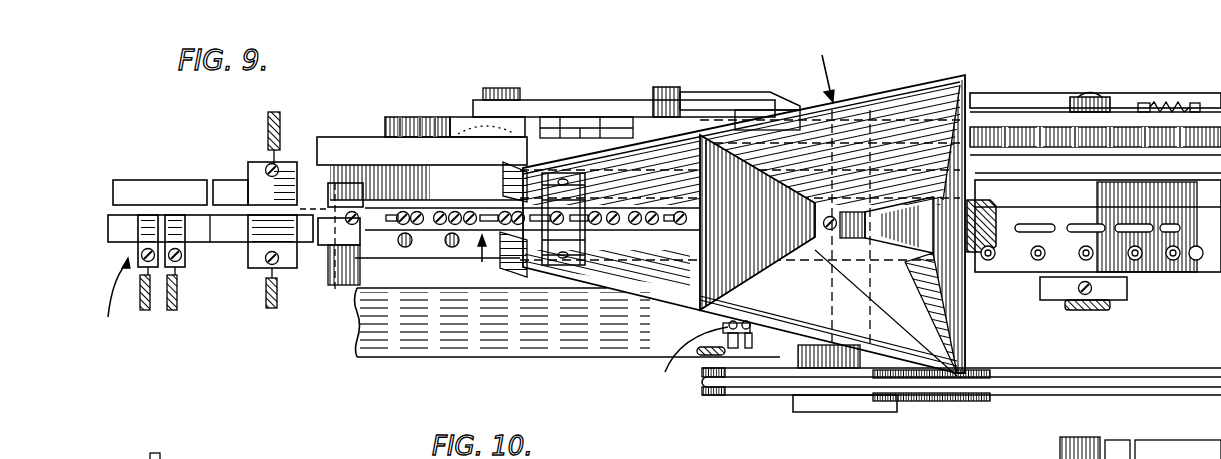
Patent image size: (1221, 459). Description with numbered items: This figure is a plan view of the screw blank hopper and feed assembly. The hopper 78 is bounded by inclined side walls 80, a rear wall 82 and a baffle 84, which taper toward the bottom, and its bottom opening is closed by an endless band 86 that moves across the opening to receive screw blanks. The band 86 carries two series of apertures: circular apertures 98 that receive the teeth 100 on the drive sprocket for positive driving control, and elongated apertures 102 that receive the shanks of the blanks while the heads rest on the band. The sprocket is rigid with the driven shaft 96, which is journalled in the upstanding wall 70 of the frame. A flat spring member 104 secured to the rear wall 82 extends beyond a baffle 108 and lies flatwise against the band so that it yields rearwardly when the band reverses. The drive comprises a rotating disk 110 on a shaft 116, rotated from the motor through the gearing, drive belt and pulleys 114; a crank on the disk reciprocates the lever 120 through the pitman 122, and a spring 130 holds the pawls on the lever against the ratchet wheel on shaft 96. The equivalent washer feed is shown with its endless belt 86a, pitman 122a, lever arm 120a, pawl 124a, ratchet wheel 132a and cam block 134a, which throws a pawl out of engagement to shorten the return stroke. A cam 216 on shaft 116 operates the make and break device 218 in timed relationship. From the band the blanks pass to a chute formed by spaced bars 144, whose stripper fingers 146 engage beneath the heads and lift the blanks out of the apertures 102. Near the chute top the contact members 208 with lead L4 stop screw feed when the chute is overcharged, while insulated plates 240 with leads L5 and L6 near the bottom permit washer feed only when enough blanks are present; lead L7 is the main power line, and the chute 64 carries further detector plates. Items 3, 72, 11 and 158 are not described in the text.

In FIG. 9, the direction arrow 3 is at (480, 261).
In FIG. 9, the upstanding wall 70 is at (961, 414).
In FIG. 9, the frame member 72 is at (595, 345).
In FIG. 9, the hopper 78 is at (818, 70).
In FIG. 9, the side walls 80 is at (850, 115).
In FIG. 9, the rear wall 82 is at (960, 338).
In FIG. 9, the baffle 84 is at (697, 288).
In FIG. 9, the endless band 86 is at (1063, 255).
In FIG. 9, the driven shaft 96 is at (1085, 302).
In FIG. 9, the circular apertures 98 is at (452, 248).
In FIG. 9, the teeth 100 is at (1173, 260).
In FIG. 9, the elongated apertures 102 is at (1028, 232).
In FIG. 9, the flat spring member 104 is at (980, 215).
In FIG. 9, the baffle 108 is at (903, 240).
In FIG. 9, the rotating disk 110 is at (737, 120).
In FIG. 9, the gearing, drive belt and pulleys 114 is at (1210, 393).
In FIG. 9, the shaft 116 is at (852, 412).
In FIG. 9, the lever 120 is at (1120, 113).
In FIG. 9, the pitman 122 is at (1022, 95).
In FIG. 9, the spring 130 is at (1162, 102).
In FIG. 9, the lever arm 120a is at (608, 102).
In FIG. 9, the pitman 122a is at (723, 93).
In FIG. 9, the pawl 124a is at (640, 128).
In FIG. 9, the ratchet wheel 132a is at (422, 115).
In FIG. 10, the ratchet wheel 132a is at (983, 458).
In FIG. 9, the cam block 134a is at (458, 115).
In FIG. 9, the spaced bars 144 is at (173, 188).
In FIG. 9, the stripper fingers 146 is at (337, 183).
In FIG. 9, the contact members 208 is at (260, 230).
In FIG. 9, the cam 216 is at (828, 313).
In FIG. 9, the make and break device 218 is at (723, 327).
In FIG. 9, the insulated plates 240 is at (122, 305).
In FIG. 9, the current lead L4 is at (273, 300).
In FIG. 9, the current lead L5 is at (148, 297).
In FIG. 9, the current lead L6 is at (172, 308).
In FIG. 9, the current lead L7 is at (272, 128).
In FIG. 10, the chute 64 is at (188, 458).
In FIG. 10, the direction arrow 11 is at (286, 450).
In FIG. 10, the member 158 is at (314, 451).
In FIG. 10, the endless belt 86a is at (392, 453).